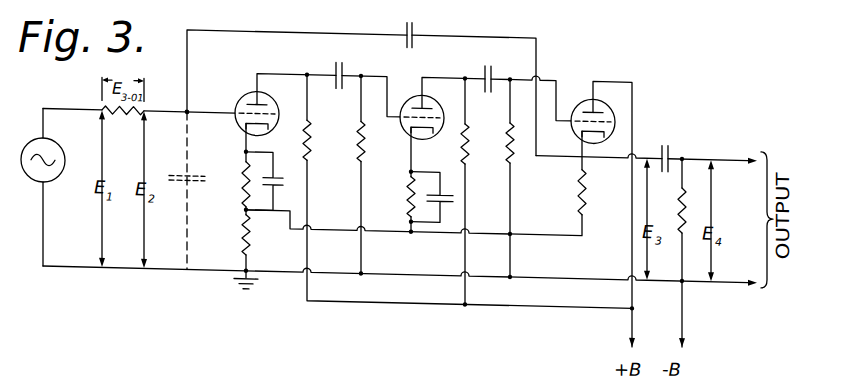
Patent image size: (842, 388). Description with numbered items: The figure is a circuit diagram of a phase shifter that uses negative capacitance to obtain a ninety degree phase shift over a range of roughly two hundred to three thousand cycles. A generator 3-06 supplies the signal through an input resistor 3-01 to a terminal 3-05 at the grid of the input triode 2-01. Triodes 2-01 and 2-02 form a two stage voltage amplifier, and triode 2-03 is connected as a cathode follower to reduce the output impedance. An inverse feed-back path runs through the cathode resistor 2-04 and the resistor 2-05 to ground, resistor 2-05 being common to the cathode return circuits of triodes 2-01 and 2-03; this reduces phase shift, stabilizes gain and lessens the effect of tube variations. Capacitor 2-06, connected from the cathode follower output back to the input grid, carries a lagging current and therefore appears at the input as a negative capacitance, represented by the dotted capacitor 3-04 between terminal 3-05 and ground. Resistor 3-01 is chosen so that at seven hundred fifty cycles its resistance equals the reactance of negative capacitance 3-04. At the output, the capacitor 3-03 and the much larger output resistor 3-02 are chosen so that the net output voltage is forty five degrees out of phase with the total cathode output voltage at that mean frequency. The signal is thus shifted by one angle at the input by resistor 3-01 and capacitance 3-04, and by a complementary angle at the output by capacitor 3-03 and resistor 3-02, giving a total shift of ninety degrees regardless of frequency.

The input resistor 3-01 is at (123, 123).
The output resistor 3-02 is at (681, 181).
The output capacitor 3-03 is at (672, 137).
The equivalent negative capacitance 3-04 is at (188, 170).
The input terminal 3-05 is at (188, 107).
The generator 3-06 is at (45, 181).
The input triode 2-01 is at (263, 101).
The second triode 2-02 is at (443, 96).
The cathode follower triode 2-03 is at (596, 95).
The cathode resistor 2-04 is at (578, 191).
The common cathode resistor 2-05 is at (249, 233).
The feedback capacitor 2-06 is at (413, 22).